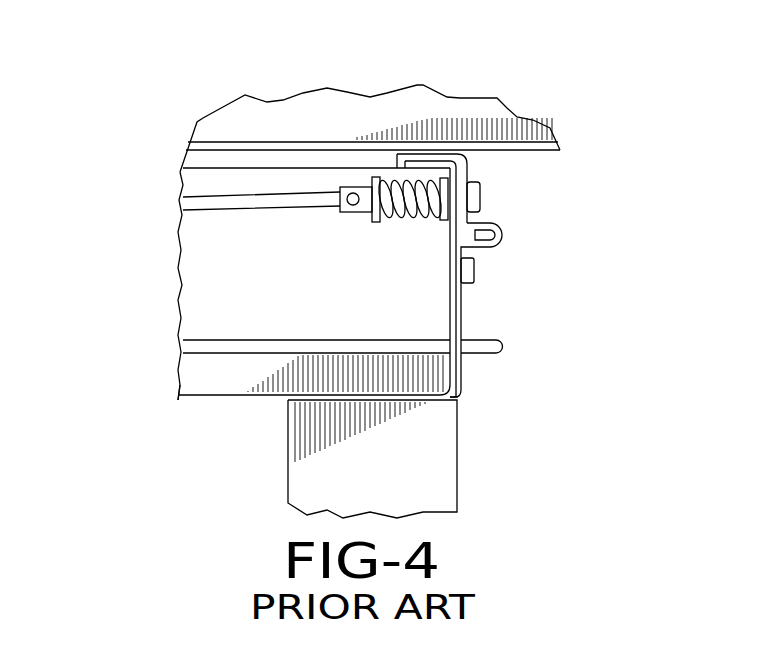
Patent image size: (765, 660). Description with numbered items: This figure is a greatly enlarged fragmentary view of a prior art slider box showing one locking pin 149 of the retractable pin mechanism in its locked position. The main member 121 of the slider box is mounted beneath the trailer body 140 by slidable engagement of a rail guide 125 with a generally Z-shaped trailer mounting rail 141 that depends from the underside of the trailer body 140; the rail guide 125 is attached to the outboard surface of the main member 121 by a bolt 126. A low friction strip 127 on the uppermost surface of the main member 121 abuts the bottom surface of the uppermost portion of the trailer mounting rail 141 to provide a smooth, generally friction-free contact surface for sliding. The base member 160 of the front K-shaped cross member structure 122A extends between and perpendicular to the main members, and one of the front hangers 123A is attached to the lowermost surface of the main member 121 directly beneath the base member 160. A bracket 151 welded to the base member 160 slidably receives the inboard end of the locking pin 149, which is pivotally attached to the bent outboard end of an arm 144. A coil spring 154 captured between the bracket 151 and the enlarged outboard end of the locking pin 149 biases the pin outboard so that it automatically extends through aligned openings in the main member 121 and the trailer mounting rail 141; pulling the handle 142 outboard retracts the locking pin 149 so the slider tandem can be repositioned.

The trailer body 140 is at (474, 92).
The trailer mounting rail 141 is at (467, 162).
The low friction strip 127 is at (428, 156).
The rail guide 125 is at (502, 238).
The locking pin 149 is at (480, 192).
The bolt 126 is at (476, 272).
The handle 142 is at (500, 348).
The main member 121 is at (466, 383).
The front hanger 123A is at (455, 480).
The front K-shaped cross member structure 122A is at (193, 385).
The base member 160 is at (193, 282).
The arm 144 is at (236, 206).
The bracket 151 is at (362, 213).
The coil spring 154 is at (432, 212).